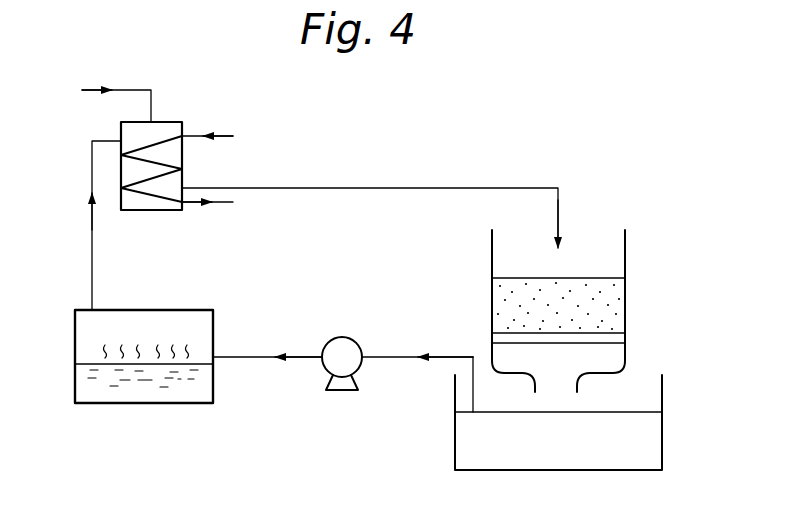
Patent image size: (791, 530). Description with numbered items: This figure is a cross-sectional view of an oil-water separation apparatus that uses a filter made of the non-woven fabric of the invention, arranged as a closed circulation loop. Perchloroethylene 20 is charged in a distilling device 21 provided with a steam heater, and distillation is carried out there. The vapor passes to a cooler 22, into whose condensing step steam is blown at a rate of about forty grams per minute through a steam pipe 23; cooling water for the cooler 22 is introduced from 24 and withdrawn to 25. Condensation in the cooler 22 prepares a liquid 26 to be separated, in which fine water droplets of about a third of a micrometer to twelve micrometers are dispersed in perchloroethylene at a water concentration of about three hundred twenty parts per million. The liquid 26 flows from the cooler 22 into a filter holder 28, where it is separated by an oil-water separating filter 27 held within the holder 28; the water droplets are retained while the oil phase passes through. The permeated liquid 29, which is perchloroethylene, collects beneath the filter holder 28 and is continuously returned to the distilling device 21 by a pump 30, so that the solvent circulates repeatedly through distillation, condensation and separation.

The perchloroethylene 20 is at (172, 393).
The distilling device 21 is at (75, 325).
The cooler 22 is at (178, 118).
The steam pipe 23 is at (138, 83).
The cooling water inlet 24 is at (227, 135).
The cooling water outlet 25 is at (227, 205).
The liquid to be separated 26 is at (592, 277).
The oil-water separating filter 27 is at (626, 338).
The filter holder 28 is at (626, 262).
The permeated liquid 29 is at (578, 464).
The pump 30 is at (350, 335).